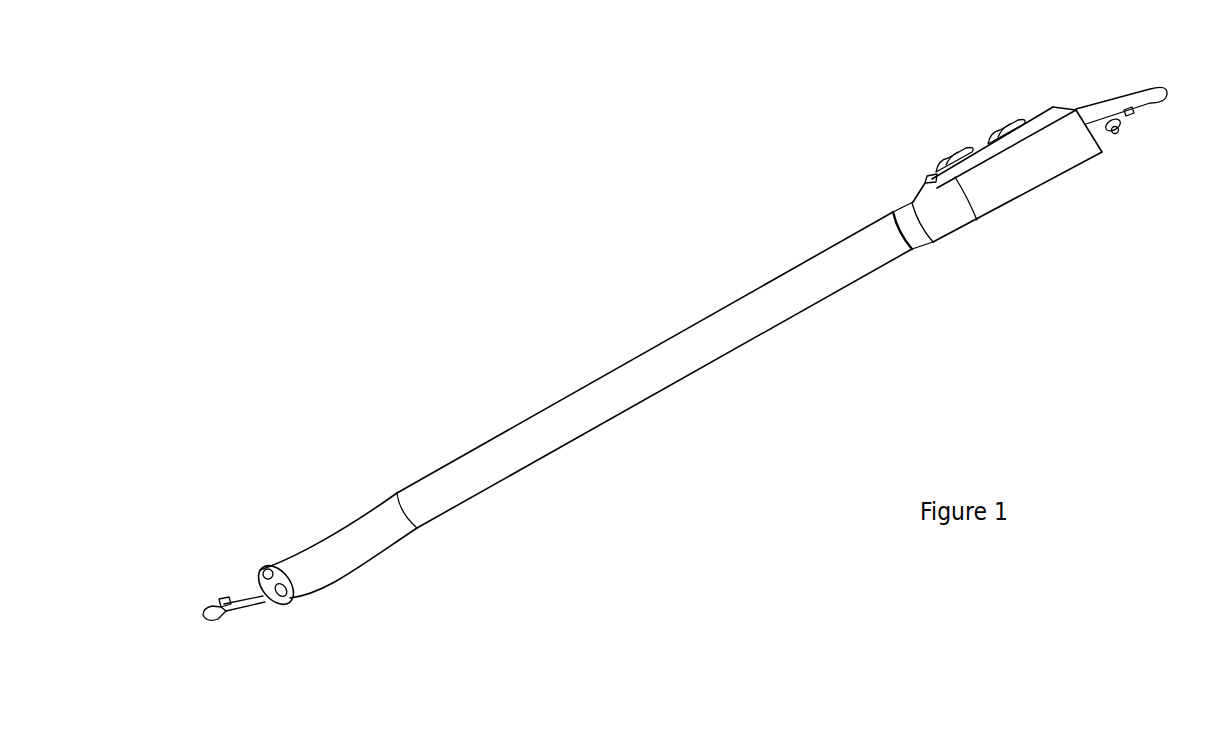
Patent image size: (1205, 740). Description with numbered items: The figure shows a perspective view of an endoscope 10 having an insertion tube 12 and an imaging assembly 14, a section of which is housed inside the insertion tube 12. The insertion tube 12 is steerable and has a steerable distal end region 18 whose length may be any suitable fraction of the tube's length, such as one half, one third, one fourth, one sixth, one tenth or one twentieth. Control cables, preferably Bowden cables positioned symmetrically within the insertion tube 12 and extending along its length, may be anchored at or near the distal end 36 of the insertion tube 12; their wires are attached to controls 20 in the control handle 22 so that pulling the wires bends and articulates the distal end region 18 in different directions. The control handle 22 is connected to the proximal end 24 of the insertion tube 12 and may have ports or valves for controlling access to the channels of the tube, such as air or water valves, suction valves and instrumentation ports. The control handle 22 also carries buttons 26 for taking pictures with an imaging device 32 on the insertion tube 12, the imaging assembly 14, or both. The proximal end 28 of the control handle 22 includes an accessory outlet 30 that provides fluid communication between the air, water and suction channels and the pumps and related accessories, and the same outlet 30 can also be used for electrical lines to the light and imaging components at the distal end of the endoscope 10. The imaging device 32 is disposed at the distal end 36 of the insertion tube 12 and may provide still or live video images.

The endoscope 10 is at (527, 282).
The insertion tube 12 is at (640, 382).
The imaging assembly 14 is at (249, 621).
The steerable distal end region 18 is at (348, 543).
The controls 20 is at (1003, 125).
The control handle 22 is at (992, 183).
The proximal end of the insertion tube 24 is at (911, 247).
The buttons 26 is at (925, 177).
The proximal end of the control handle 28 is at (1102, 152).
The accessory outlet 30 is at (1107, 112).
The imaging device 32 is at (267, 567).
The distal end of the insertion tube 36 is at (258, 565).